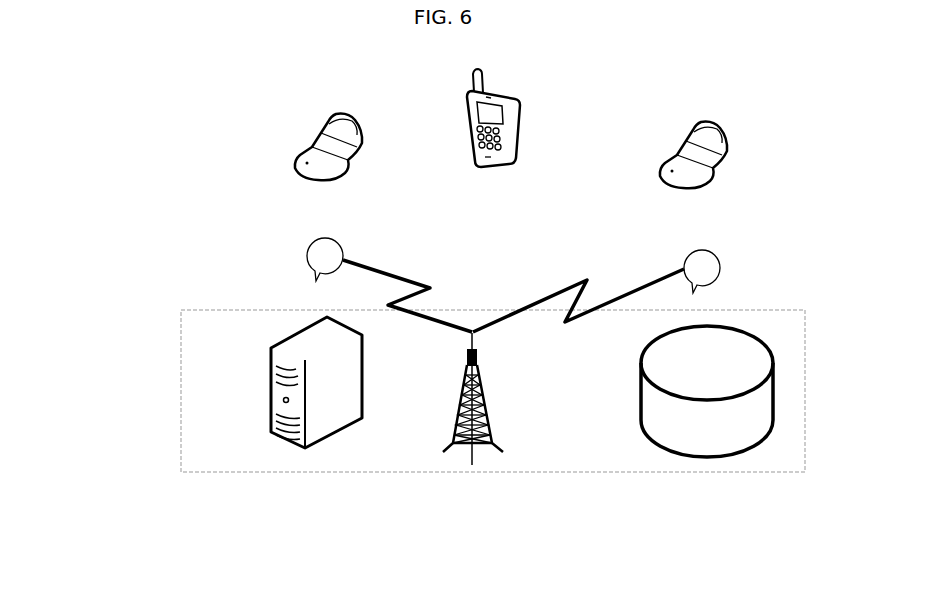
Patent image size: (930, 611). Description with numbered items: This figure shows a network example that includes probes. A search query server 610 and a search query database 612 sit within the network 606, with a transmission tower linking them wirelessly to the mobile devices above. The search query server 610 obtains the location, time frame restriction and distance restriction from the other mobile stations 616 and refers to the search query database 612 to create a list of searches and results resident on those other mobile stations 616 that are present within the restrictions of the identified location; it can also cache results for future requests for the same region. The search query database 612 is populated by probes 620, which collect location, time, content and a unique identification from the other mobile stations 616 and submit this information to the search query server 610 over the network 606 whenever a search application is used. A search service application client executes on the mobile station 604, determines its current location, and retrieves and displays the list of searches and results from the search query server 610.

The mobile station 604 is at (493, 146).
The network 606 is at (180, 392).
The search query server 610 is at (268, 384).
The search query database 612 is at (707, 391).
The other mobile stations 616 is at (512, 170).
The probes 620 is at (303, 260).